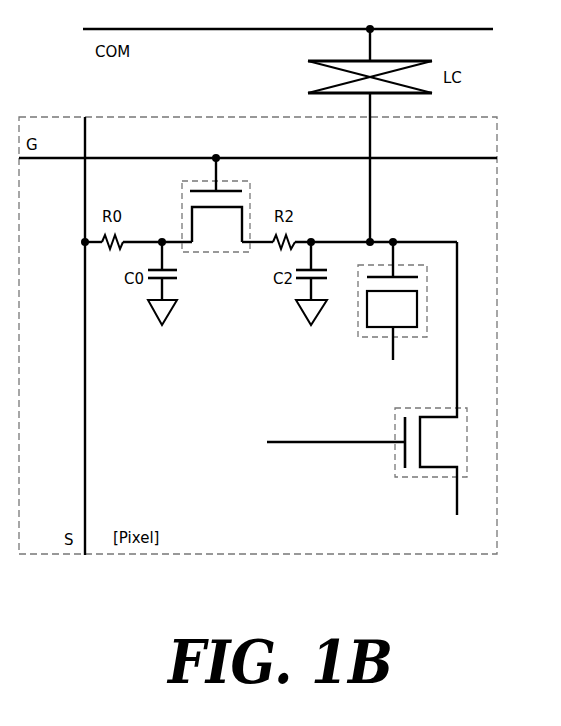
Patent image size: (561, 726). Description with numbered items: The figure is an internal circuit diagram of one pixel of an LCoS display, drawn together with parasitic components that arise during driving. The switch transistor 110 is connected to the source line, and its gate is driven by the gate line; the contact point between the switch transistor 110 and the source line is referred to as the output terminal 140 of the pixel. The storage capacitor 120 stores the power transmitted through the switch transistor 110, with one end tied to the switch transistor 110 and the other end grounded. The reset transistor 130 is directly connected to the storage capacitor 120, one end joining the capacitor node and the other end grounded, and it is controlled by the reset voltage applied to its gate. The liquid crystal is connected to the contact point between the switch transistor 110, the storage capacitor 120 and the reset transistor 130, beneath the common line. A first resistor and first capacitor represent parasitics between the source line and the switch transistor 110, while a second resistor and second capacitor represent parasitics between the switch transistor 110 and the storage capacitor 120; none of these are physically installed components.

The switch transistor 110 is at (232, 253).
The storage capacitor 120 is at (358, 334).
The reset transistor 130 is at (467, 432).
The output terminal 140 is at (87, 247).